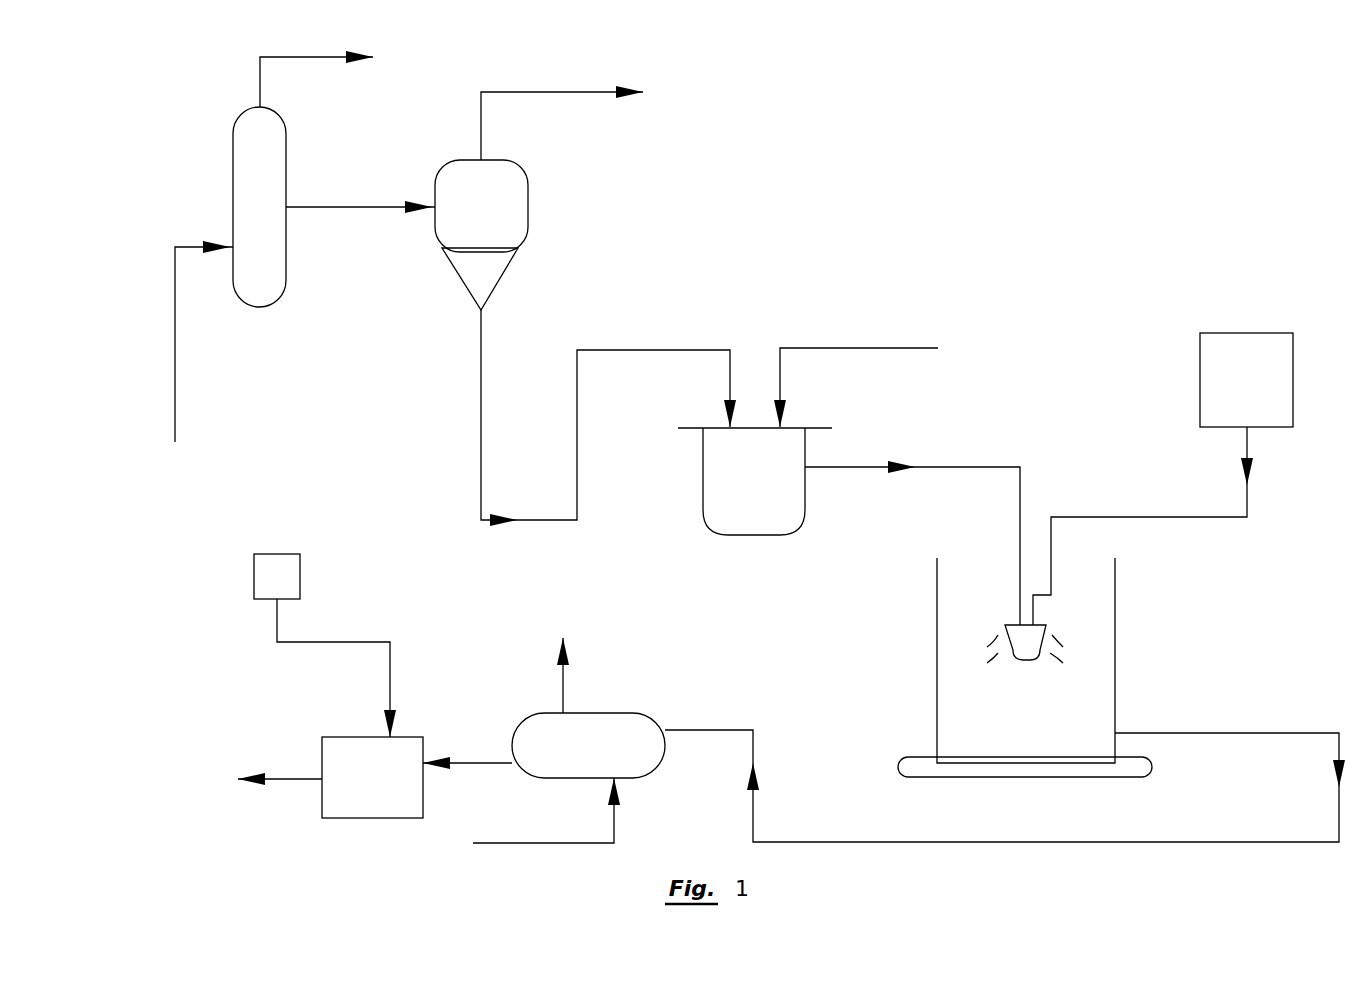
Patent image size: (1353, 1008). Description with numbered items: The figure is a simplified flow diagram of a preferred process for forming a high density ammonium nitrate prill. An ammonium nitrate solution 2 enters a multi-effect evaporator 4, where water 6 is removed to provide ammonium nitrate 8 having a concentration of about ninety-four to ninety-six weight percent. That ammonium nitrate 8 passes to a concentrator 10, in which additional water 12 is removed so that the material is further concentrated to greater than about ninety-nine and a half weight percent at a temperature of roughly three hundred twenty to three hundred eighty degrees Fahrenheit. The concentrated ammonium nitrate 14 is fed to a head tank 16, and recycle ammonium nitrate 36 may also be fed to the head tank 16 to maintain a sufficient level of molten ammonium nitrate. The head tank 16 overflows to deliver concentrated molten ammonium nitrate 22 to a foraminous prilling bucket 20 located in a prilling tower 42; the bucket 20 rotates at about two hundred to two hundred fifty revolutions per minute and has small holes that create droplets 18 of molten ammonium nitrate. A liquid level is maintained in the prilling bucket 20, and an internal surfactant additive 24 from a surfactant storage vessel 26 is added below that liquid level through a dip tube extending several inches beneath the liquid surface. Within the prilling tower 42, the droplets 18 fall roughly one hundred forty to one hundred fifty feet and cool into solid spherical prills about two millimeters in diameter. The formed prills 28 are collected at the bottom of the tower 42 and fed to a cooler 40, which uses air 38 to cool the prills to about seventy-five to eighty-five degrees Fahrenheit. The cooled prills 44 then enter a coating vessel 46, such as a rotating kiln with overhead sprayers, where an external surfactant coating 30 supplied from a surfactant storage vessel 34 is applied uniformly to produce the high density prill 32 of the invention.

The ammonium nitrate solution 2 is at (175, 365).
The multi-effect evaporator 4 is at (268, 226).
The water 6 is at (292, 54).
The ammonium nitrate 8 is at (335, 206).
The concentrator 10 is at (461, 231).
The additional water 12 is at (543, 92).
The concentrated ammonium nitrate 14 is at (577, 448).
The head tank 16 is at (734, 496).
The droplets 18 is at (993, 640).
The prilling bucket 20 is at (1023, 662).
The concentrated molten ammonium nitrate 22 is at (963, 466).
The internal surfactant additive 24 is at (1183, 517).
The surfactant storage vessel 26 is at (1233, 393).
The formed prills 28 is at (1237, 732).
The external surfactant coating 30 is at (332, 640).
The high density prill 32 is at (307, 780).
The surfactant storage vessel 34 is at (263, 588).
The recycle ammonium nitrate 36 is at (828, 348).
The air 38 is at (563, 698).
The cooler 40 is at (569, 756).
The prilling tower 42 is at (937, 707).
The cooled prills 44 is at (470, 762).
The coating vessel 46 is at (358, 793).